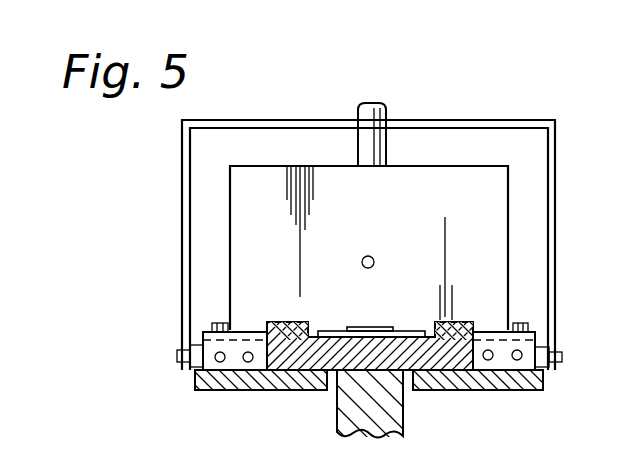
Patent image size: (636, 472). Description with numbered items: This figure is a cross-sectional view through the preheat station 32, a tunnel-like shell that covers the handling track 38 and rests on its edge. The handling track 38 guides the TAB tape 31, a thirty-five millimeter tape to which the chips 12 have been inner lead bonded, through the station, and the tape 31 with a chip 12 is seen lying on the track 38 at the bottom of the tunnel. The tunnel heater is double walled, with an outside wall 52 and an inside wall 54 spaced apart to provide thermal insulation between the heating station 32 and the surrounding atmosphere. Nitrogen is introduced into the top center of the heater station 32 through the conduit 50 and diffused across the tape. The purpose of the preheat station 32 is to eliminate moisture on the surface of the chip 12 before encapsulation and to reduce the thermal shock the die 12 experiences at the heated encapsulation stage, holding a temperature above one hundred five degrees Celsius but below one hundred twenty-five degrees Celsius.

The chip 12 is at (377, 322).
The TAB tape 31 is at (347, 322).
The preheat station 32 is at (558, 117).
The handling track 38 is at (302, 378).
The conduit 50 is at (388, 108).
The outside wall 52 is at (555, 221).
The inside wall 54 is at (510, 181).